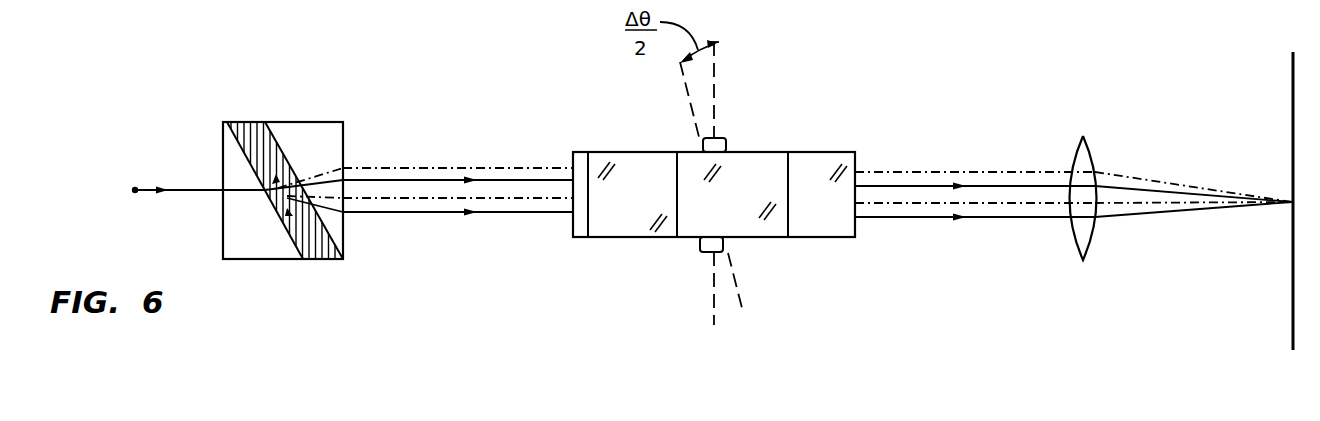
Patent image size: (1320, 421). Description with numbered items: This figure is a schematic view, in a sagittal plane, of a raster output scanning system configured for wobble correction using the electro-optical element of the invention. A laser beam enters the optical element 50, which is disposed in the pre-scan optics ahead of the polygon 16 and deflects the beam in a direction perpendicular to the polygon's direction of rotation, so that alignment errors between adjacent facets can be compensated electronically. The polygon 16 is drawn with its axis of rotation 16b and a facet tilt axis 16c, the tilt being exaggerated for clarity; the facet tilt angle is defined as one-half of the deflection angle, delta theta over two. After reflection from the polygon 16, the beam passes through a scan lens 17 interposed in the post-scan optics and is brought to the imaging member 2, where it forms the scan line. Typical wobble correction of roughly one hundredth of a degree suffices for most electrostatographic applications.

The optical element 50 is at (282, 88).
The polygon 16 is at (823, 152).
The axis of rotation 16b is at (717, 118).
The facet tilt axis 16c is at (690, 97).
The scan lens 17 is at (1092, 150).
The imaging member 2 is at (1290, 263).